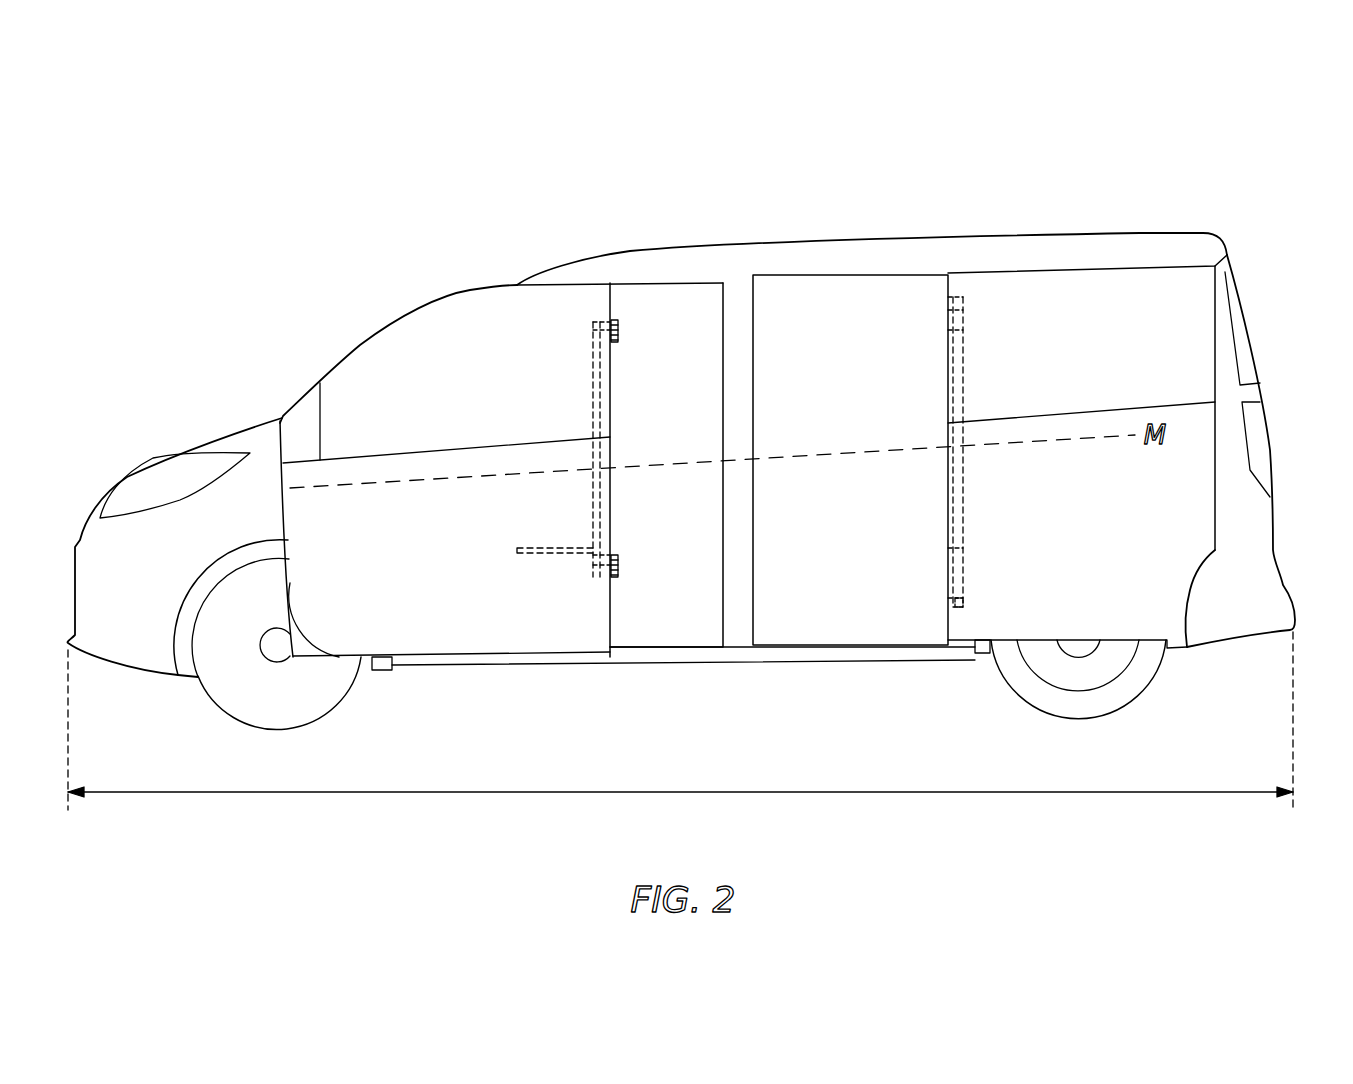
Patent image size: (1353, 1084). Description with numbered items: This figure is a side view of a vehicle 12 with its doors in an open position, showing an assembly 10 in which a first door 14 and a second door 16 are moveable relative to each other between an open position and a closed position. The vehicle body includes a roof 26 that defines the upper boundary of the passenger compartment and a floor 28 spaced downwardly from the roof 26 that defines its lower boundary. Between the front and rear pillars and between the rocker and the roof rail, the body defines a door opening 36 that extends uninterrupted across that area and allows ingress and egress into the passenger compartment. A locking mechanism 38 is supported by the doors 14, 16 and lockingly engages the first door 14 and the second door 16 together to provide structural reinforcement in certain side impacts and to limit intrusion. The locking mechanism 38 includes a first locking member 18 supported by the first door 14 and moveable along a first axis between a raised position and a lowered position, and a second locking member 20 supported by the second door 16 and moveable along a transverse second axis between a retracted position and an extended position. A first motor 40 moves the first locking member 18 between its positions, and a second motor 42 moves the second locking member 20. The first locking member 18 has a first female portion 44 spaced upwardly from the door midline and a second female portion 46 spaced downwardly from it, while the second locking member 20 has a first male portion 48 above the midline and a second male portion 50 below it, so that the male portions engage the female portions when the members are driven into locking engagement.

The assembly 10 is at (777, 206).
The vehicle 12 is at (1022, 139).
The first door 14 is at (1167, 488).
The second door 16 is at (343, 523).
The first locking member 18 is at (966, 396).
The second locking member 20 is at (592, 392).
The roof 26 is at (923, 238).
The floor 28 is at (866, 645).
The door opening 36 is at (828, 578).
The locking mechanism 38 is at (1008, 345).
The first motor 40 is at (963, 605).
The second motor 42 is at (538, 548).
The first female portion 44 is at (946, 314).
The second female portion 46 is at (946, 550).
The first male portion 48 is at (620, 330).
The second male portion 50 is at (620, 565).